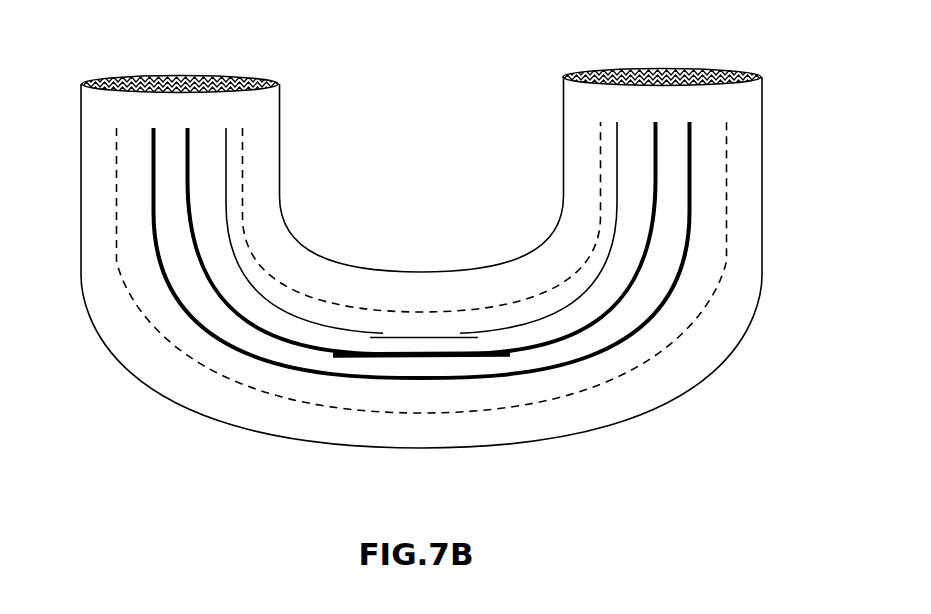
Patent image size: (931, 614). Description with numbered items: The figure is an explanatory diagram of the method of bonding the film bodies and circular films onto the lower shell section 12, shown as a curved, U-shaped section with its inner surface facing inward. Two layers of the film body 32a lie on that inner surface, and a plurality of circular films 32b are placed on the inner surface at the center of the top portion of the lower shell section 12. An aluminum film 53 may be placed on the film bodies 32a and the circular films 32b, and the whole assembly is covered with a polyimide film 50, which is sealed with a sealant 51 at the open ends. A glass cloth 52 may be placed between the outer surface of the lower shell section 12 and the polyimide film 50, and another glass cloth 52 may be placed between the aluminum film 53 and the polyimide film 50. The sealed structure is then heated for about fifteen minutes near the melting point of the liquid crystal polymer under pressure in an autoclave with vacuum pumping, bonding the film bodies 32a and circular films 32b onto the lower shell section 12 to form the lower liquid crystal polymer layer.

The polyimide film 50 is at (429, 269).
The sealant 51 is at (205, 77).
The glass cloth 52 is at (310, 291).
The aluminum film 53 is at (570, 291).
The lower shell section 12 is at (248, 351).
The film body 32a is at (616, 303).
The circular film 32b is at (428, 357).